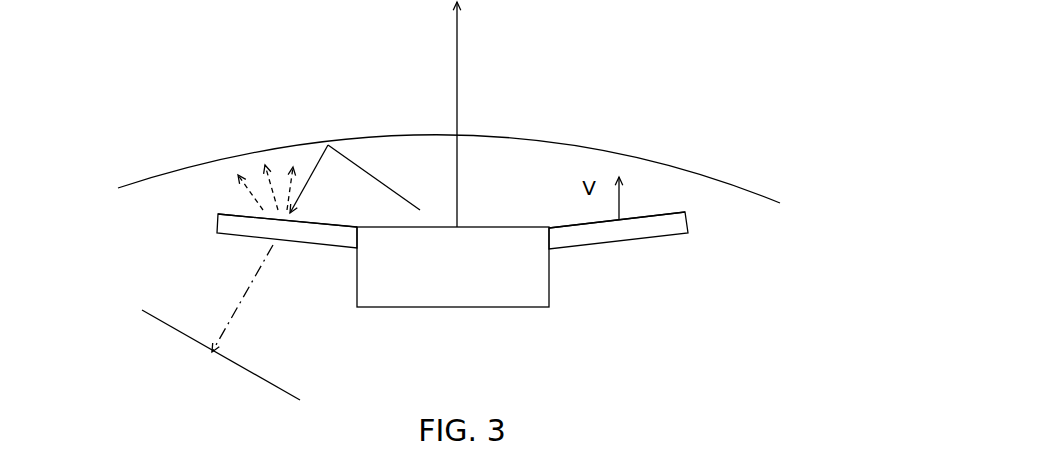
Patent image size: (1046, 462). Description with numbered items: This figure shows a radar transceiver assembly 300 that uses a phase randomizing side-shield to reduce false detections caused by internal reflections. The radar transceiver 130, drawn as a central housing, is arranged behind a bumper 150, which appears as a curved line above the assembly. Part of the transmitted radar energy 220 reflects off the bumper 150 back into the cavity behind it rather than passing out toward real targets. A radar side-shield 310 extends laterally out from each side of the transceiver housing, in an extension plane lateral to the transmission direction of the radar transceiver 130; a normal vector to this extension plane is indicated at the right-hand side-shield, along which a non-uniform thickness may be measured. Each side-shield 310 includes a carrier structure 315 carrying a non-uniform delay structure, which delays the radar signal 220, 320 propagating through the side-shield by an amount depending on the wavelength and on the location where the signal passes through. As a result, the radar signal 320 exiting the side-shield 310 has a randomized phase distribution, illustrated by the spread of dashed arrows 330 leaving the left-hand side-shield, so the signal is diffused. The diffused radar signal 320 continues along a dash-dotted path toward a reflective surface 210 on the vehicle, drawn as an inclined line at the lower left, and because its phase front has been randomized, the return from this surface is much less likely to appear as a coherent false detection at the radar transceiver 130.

The radar transceiver assembly 300 is at (858, 63).
The bumper 150 is at (665, 157).
The radar transceiver 130 is at (453, 154).
The radar side-shield 310 is at (202, 235).
The carrier structure 315 is at (325, 240).
The transmitted radar energy 220 is at (355, 179).
The reflected light rays 330 is at (239, 187).
The radar signal after propagation through side-shield 320 is at (238, 298).
The reflective surface 210 is at (150, 318).